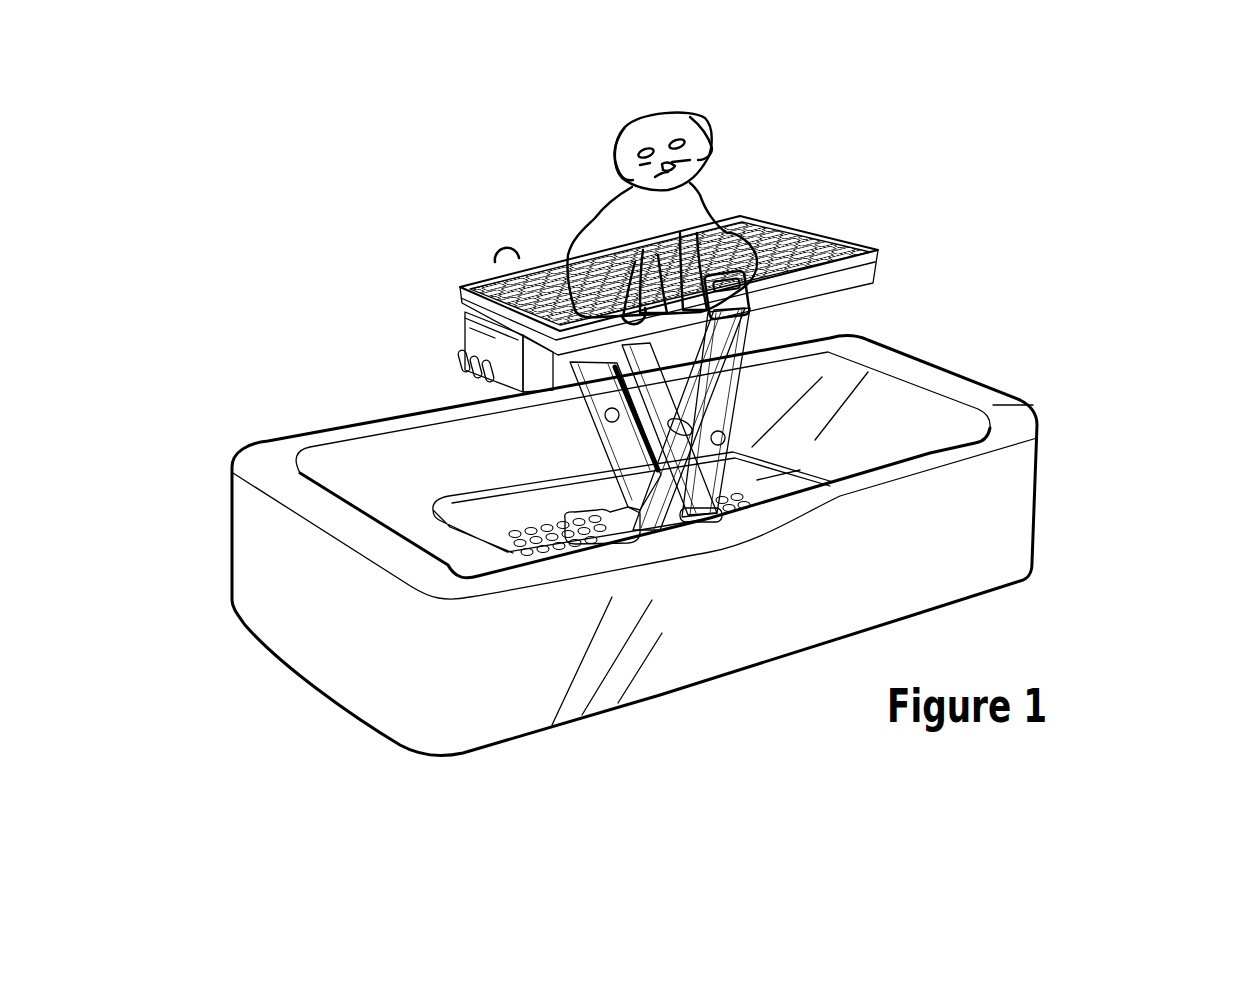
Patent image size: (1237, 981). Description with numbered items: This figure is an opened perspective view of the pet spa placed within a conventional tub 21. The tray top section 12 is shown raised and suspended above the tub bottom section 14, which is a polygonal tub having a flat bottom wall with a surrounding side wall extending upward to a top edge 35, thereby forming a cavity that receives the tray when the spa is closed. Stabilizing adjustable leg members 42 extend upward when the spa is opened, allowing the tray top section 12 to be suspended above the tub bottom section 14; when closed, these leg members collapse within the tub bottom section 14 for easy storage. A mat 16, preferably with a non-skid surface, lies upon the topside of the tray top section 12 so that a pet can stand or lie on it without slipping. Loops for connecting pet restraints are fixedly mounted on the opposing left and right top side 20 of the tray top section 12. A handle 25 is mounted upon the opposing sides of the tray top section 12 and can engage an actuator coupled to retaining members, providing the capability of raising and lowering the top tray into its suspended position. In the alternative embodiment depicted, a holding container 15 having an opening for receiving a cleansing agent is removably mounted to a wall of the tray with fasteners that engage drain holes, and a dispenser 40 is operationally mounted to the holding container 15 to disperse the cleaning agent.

The tray top section 12 is at (867, 288).
The tub bottom section 14 is at (735, 477).
The holding container 15 is at (493, 348).
The mat 16 is at (867, 243).
The right top side 20 is at (622, 305).
The conventional tub 21 is at (990, 525).
The handle 25 is at (783, 223).
The top edge 35 is at (520, 530).
The dispenser 40 is at (453, 362).
The stabilizing adjustable leg members 42 is at (438, 520).